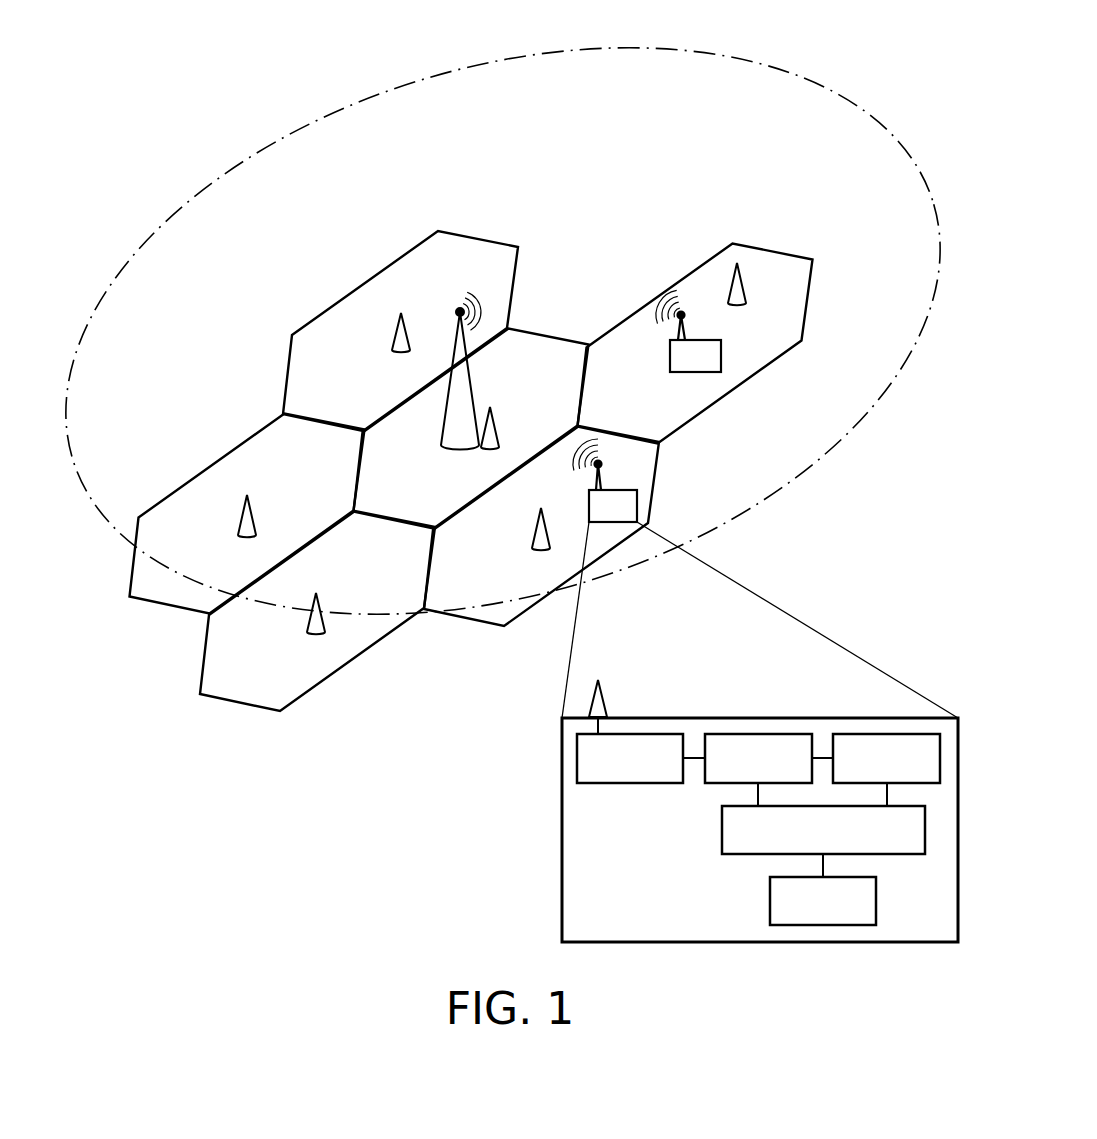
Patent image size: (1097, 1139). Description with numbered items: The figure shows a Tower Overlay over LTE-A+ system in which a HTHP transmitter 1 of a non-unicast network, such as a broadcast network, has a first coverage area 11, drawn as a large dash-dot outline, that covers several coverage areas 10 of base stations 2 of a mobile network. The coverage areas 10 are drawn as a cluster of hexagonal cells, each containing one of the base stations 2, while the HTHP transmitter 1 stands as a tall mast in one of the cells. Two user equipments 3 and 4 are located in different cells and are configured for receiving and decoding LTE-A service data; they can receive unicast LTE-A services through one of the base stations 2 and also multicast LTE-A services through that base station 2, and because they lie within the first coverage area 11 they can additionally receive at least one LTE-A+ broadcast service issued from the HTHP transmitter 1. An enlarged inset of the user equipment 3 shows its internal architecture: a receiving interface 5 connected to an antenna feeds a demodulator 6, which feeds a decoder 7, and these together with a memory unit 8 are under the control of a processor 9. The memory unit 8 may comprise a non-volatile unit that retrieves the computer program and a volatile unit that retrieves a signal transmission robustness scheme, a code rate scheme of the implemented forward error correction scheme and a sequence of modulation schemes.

The HTHP transmitter 1 is at (459, 311).
The base station 2 is at (398, 330).
The user equipment 3 is at (637, 502).
The user equipment 4 is at (721, 357).
The receiving interface 5 is at (647, 734).
The demodulator 6 is at (780, 734).
The decoder 7 is at (918, 734).
The memory unit 8 is at (770, 894).
The processor 9 is at (722, 822).
The coverage area of base station 10 is at (778, 253).
The first coverage area 11 is at (776, 68).